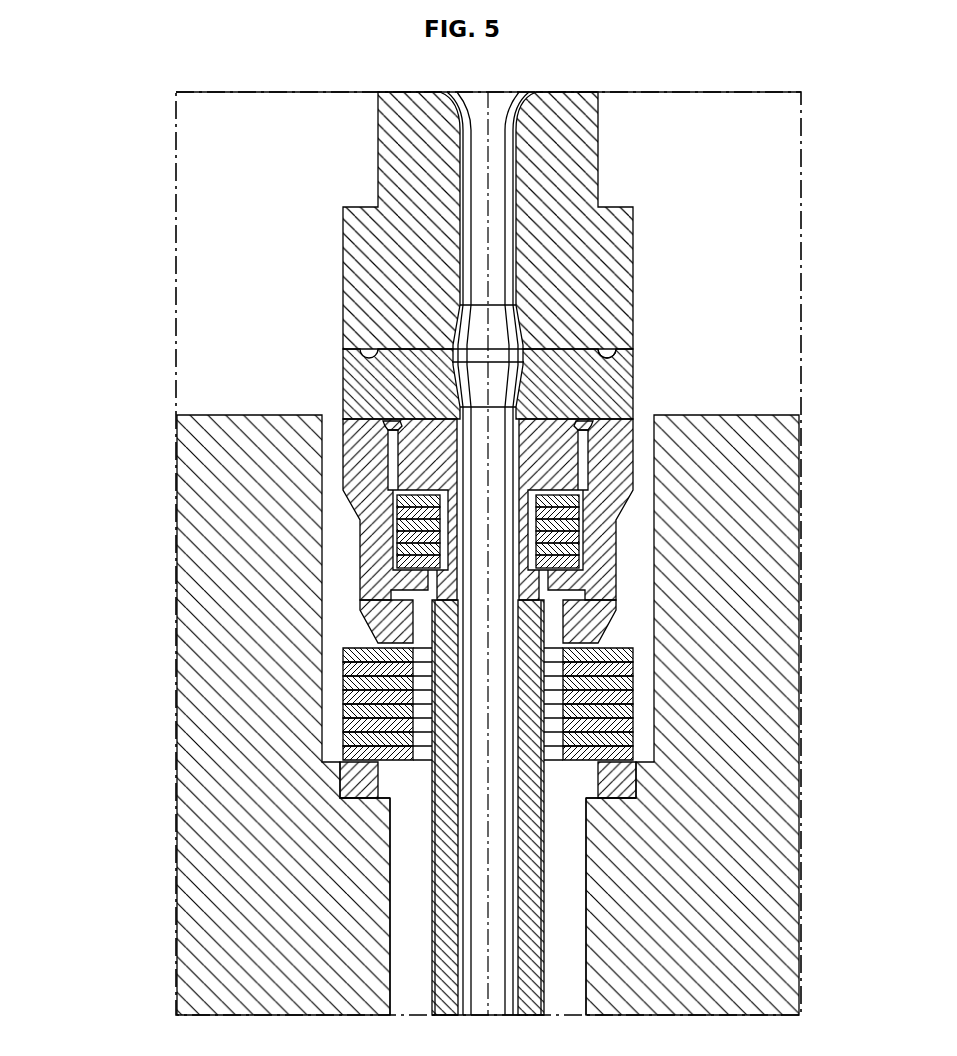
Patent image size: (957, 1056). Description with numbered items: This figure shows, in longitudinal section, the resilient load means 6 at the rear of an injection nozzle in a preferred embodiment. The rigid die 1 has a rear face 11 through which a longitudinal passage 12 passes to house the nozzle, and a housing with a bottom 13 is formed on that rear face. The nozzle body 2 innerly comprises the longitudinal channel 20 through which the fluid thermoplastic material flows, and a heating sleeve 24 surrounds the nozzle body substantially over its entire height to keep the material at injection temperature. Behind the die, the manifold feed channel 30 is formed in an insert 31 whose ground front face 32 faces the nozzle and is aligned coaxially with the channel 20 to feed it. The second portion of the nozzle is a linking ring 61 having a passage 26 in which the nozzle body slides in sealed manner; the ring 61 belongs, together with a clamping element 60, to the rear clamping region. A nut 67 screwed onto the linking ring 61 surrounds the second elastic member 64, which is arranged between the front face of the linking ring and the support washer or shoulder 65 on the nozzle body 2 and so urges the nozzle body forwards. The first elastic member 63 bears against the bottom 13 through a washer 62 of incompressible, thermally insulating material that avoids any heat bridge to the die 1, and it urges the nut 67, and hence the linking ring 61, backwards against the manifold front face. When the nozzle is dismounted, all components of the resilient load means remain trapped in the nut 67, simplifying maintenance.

The die 1 is at (222, 555).
The nozzle body 2 is at (522, 937).
The resilient load means 6 is at (106, 456).
The rear face 11 is at (247, 414).
The longitudinal passage 12 is at (405, 887).
The bottom 13 is at (356, 806).
The longitudinal channel 20 is at (495, 862).
The heating sleeve 24 is at (540, 900).
The passage 26 is at (440, 416).
The longitudinal feed channel 30 is at (470, 170).
The insert 31 is at (400, 270).
The front face 32 is at (600, 356).
The clamping element 60 is at (378, 338).
The linking ring 61 is at (596, 381).
The washer 62 is at (345, 778).
The first elastic member 63 is at (600, 692).
The second elastic member 64 is at (565, 522).
The support washer 65 is at (560, 590).
The nut 67 is at (608, 450).